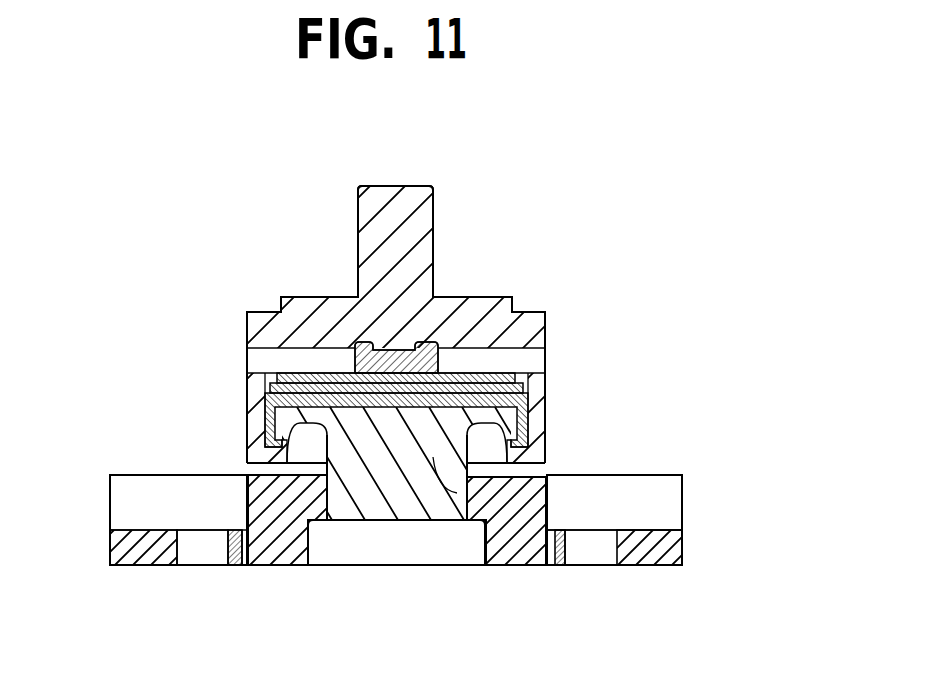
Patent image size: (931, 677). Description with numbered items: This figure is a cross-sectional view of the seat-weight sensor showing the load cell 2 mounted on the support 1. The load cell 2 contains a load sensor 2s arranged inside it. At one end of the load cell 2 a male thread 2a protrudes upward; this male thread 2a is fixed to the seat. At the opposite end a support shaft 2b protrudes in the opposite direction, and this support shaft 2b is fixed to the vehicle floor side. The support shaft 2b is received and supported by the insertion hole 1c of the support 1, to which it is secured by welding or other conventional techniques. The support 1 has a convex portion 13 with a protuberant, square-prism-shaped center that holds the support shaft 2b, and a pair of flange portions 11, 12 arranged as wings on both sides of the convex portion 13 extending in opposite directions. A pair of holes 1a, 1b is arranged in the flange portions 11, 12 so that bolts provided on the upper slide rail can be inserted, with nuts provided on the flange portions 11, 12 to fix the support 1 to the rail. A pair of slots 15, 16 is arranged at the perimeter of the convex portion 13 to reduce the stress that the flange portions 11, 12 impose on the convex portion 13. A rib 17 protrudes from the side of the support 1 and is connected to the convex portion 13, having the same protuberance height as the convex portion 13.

The support 1 is at (110, 545).
The hole 1a is at (580, 533).
The hole 1b is at (208, 547).
The insertion hole 1c is at (330, 490).
The load cell 2 is at (308, 297).
The male thread 2a is at (400, 186).
The support shaft 2b is at (470, 496).
The load sensor 2s is at (488, 373).
The flange portion 11 is at (682, 555).
The flange portion 12 is at (147, 530).
The convex portion 13 is at (236, 473).
The slot 15 is at (550, 566).
The slot 16 is at (239, 566).
The rib 17 is at (682, 500).